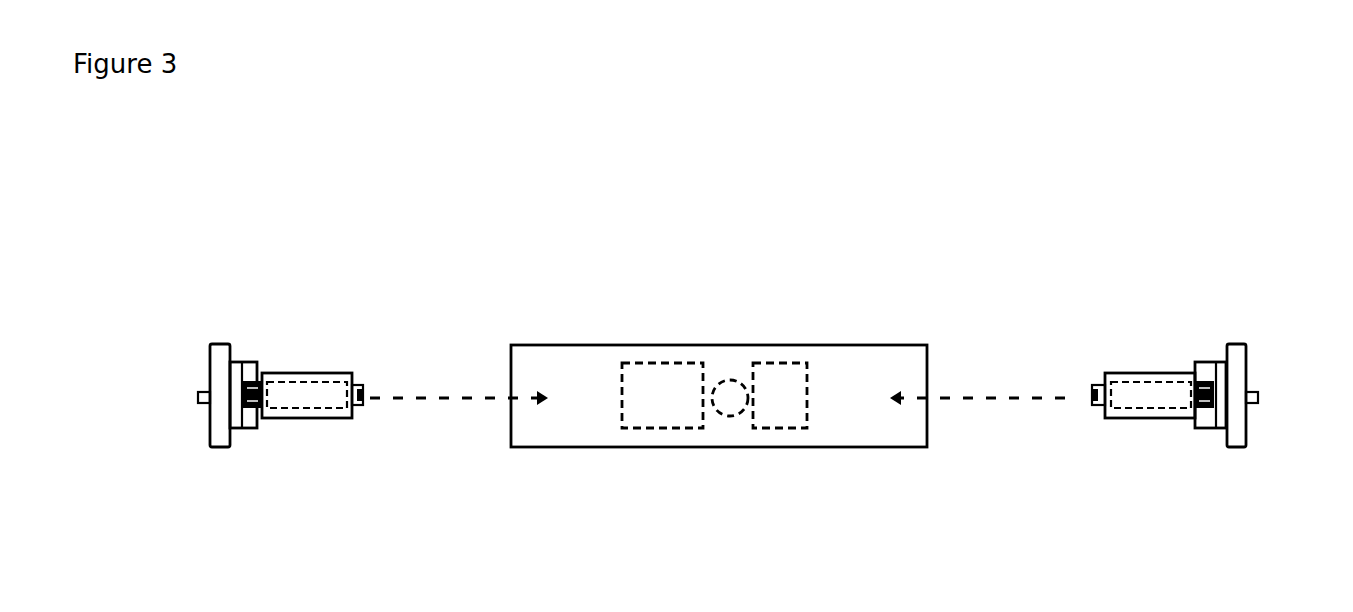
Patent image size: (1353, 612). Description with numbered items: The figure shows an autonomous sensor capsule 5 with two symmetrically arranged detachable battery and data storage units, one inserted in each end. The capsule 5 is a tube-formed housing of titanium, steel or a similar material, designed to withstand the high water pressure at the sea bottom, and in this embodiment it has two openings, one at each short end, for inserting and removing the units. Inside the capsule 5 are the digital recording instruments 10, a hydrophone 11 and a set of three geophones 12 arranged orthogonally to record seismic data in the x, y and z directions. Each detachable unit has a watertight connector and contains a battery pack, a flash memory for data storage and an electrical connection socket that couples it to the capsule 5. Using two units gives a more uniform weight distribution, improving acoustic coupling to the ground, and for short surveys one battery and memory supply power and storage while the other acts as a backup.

The autonomous sensor capsule 5 is at (658, 447).
The digital recording instruments 10 is at (667, 390).
The hydrophone 11 is at (733, 380).
The geophones 12 is at (785, 382).